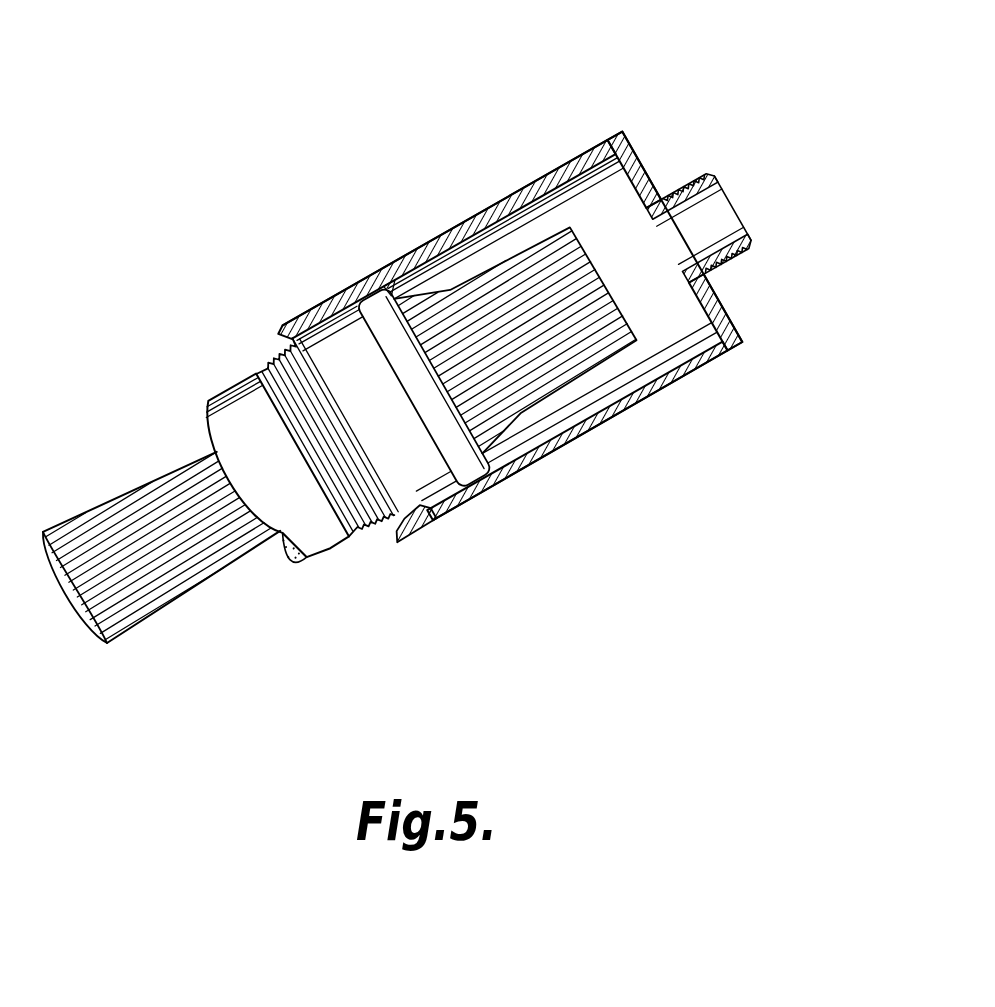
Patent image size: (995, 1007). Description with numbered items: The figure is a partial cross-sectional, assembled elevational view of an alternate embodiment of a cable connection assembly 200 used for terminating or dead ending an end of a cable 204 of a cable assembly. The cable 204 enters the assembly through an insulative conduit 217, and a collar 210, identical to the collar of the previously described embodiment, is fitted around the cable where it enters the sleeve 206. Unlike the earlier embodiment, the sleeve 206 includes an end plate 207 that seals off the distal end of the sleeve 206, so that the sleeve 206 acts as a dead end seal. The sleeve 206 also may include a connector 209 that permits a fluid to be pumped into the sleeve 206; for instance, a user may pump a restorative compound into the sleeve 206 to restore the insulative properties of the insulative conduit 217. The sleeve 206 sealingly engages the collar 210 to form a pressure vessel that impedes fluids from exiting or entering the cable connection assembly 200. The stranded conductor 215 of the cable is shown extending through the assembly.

The cable connection assembly 200 is at (189, 113).
The cable 204 is at (269, 586).
The sleeve 206 is at (549, 460).
The end plate 207 is at (735, 308).
The connector 209 is at (687, 178).
The collar 210 is at (386, 527).
The stranded cable conductor 215 is at (167, 470).
The insulative conduit 217 is at (233, 383).